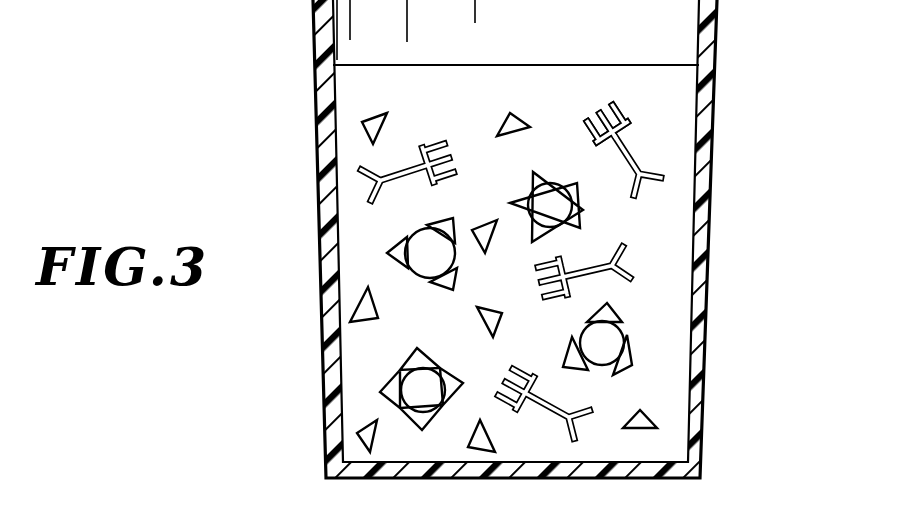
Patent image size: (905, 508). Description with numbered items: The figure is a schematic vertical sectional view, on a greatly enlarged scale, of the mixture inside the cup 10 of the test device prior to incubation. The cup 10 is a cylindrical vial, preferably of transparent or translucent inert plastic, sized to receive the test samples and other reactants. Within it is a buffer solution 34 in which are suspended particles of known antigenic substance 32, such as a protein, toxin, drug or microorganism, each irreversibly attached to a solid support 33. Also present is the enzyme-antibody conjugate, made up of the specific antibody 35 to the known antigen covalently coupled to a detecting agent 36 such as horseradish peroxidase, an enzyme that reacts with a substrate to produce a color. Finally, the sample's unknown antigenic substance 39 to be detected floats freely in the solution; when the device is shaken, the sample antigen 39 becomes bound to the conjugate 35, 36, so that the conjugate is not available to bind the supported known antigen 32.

The cup 10 is at (318, 176).
The known antigenic substance 32 is at (622, 360).
The solid support 33 is at (626, 334).
The buffer solution 34 is at (662, 398).
The specific antibody 35 is at (687, 110).
The detecting agent 36 is at (618, 115).
The antigenic substance to be detected 39 is at (512, 118).